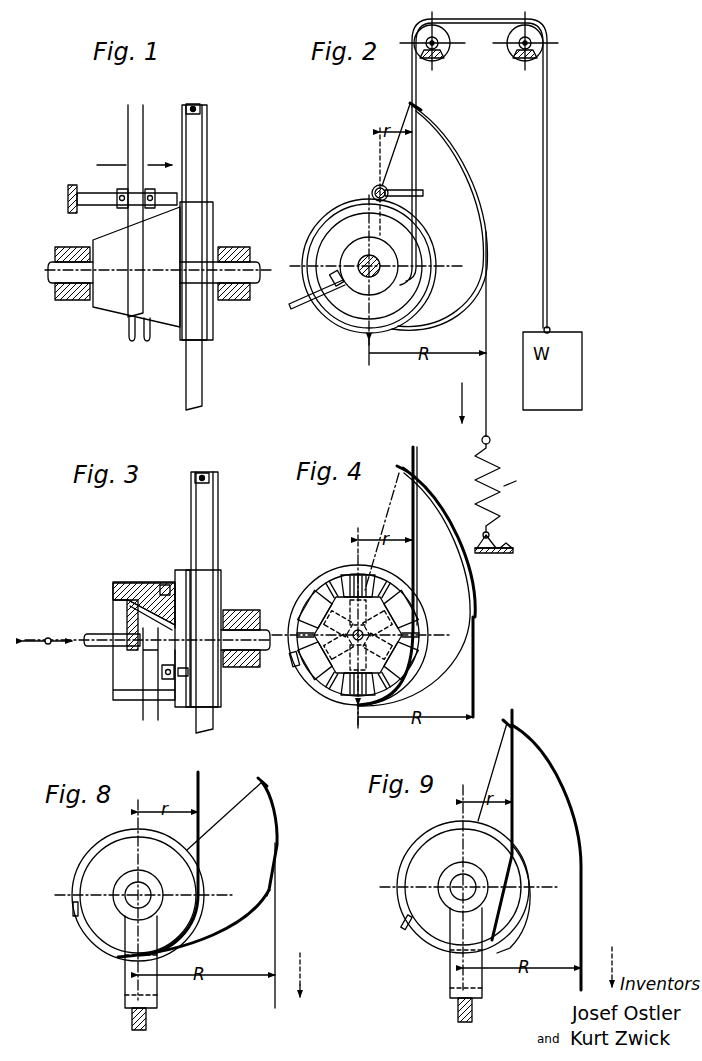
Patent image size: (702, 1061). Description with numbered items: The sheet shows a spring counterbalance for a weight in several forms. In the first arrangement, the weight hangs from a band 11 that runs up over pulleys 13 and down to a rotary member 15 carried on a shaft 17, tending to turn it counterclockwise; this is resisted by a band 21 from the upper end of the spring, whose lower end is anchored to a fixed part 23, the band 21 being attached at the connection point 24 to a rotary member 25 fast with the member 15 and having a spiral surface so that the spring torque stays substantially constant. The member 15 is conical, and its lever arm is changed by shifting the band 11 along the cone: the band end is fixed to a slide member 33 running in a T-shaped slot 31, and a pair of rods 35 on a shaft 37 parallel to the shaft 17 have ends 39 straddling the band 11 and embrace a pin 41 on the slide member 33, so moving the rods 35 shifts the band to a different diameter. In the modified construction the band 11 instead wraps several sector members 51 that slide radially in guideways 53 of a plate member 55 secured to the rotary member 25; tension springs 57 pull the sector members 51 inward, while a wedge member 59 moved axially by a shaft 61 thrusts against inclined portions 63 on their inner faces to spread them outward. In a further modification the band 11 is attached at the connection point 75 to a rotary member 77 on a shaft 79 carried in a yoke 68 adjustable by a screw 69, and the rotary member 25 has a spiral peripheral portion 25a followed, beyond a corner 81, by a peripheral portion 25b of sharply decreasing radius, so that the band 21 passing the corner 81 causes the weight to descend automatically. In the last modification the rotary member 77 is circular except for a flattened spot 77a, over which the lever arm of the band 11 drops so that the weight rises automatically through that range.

In FIG. 1, the band 11 is at (128, 137).
In FIG. 2, the band 11 is at (550, 137).
In FIG. 3, the band 11 is at (148, 716).
In FIG. 4, the band 11 is at (418, 528).
In FIG. 8, the band 11 is at (200, 782).
In FIG. 9, the band 11 is at (515, 820).
In FIG. 2, the pulleys 13 is at (508, 52).
In FIG. 1, the rotary member 15 is at (117, 303).
In FIG. 2, the rotary member 15 is at (318, 229).
In FIG. 1, the shaft 17 is at (57, 265).
In FIG. 2, the shaft 17 is at (376, 256).
In FIG. 3, the shaft 17 is at (238, 625).
In FIG. 1, the band 21 is at (186, 386).
In FIG. 2, the band 21 is at (488, 270).
In FIG. 3, the band 21 is at (214, 721).
In FIG. 4, the band 21 is at (476, 639).
In FIG. 8, the band 21 is at (277, 889).
In FIG. 9, the band 21 is at (583, 904).
In FIG. 2, the fixed part 23 is at (512, 549).
In FIG. 1, the connection point 24 is at (201, 107).
In FIG. 2, the connection point 24 is at (423, 109).
In FIG. 3, the connection point 24 is at (210, 477).
In FIG. 4, the connection point 24 is at (401, 466).
In FIG. 8, the connection point 24 is at (269, 783).
In FIG. 9, the connection point 24 is at (514, 727).
In FIG. 1, the rotary member 25 is at (207, 149).
In FIG. 2, the rotary member 25 is at (471, 285).
In FIG. 3, the rotary member 25 is at (218, 528).
In FIG. 4, the rotary member 25 is at (462, 660).
In FIG. 8, the rotary member 25 is at (233, 818).
In FIG. 9, the rotary member 25 is at (494, 769).
In FIG. 8, the spiral peripheral portion 25a is at (272, 870).
In FIG. 8, the peripheral portion 25b is at (226, 930).
In FIG. 2, the T-shaped slot 31 is at (361, 259).
In FIG. 2, the slide member 33 is at (335, 271).
In FIG. 1, the rods 35 is at (147, 341).
In FIG. 2, the rods 35 is at (341, 214).
In FIG. 1, the shaft 37 is at (90, 205).
In FIG. 2, the shaft 37 is at (373, 190).
In FIG. 1, the ends 39 is at (121, 191).
In FIG. 2, the ends 39 is at (425, 196).
In FIG. 2, the pin 41 is at (295, 310).
In FIG. 3, the sector members 51 is at (126, 582).
In FIG. 4, the sector members 51 is at (342, 585).
In FIG. 3, the guideways 53 is at (182, 572).
In FIG. 4, the guideways 53 is at (312, 602).
In FIG. 3, the plate member 55 is at (180, 700).
In FIG. 4, the plate member 55 is at (295, 665).
In FIG. 3, the tension springs 57 is at (161, 586).
In FIG. 3, the wedge member 59 is at (127, 623).
In FIG. 4, the wedge member 59 is at (366, 574).
In FIG. 3, the shaft 61 is at (87, 645).
In FIG. 3, the inclined portions 63 is at (113, 606).
In FIG. 4, the inclined portions 63 is at (322, 618).
In FIG. 8, the yoke 68 is at (131, 980).
In FIG. 9, the yoke 68 is at (455, 978).
In FIG. 8, the screw 69 is at (147, 1020).
In FIG. 9, the screw 69 is at (473, 1010).
In FIG. 8, the connection point 75 is at (73, 910).
In FIG. 9, the connection point 75 is at (410, 926).
In FIG. 8, the rotary member 77 is at (96, 924).
In FIG. 9, the rotary member 77 is at (410, 897).
In FIG. 9, the flattened spot 77a is at (505, 876).
In FIG. 8, the shaft 79 is at (148, 888).
In FIG. 9, the shaft 79 is at (452, 895).
In FIG. 8, the corner 81 is at (269, 898).